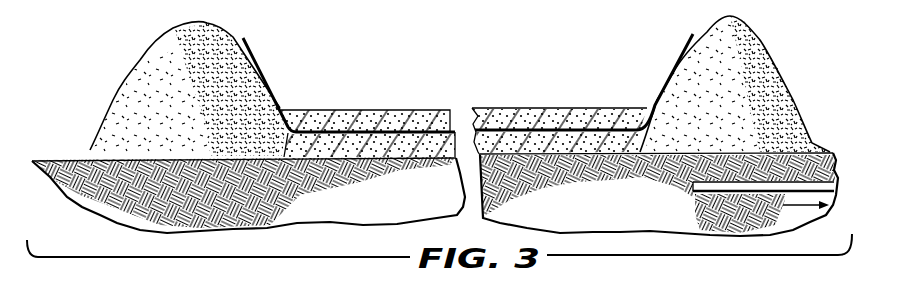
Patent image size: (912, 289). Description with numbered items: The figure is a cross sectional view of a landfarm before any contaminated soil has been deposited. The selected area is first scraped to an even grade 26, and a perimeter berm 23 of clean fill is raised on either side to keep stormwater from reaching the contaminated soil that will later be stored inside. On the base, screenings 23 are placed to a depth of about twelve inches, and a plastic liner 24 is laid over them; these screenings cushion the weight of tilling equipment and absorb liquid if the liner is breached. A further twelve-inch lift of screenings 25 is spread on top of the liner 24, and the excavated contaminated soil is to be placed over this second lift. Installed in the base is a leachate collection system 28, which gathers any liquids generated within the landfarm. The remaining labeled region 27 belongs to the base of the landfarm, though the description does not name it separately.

The perimeter berm 23 is at (134, 78).
The plastic liner 24 is at (260, 64).
The screenings 25 is at (326, 108).
The even grade 26 is at (58, 158).
The subgrade 27 is at (291, 158).
The leachate collection system 28 is at (746, 194).